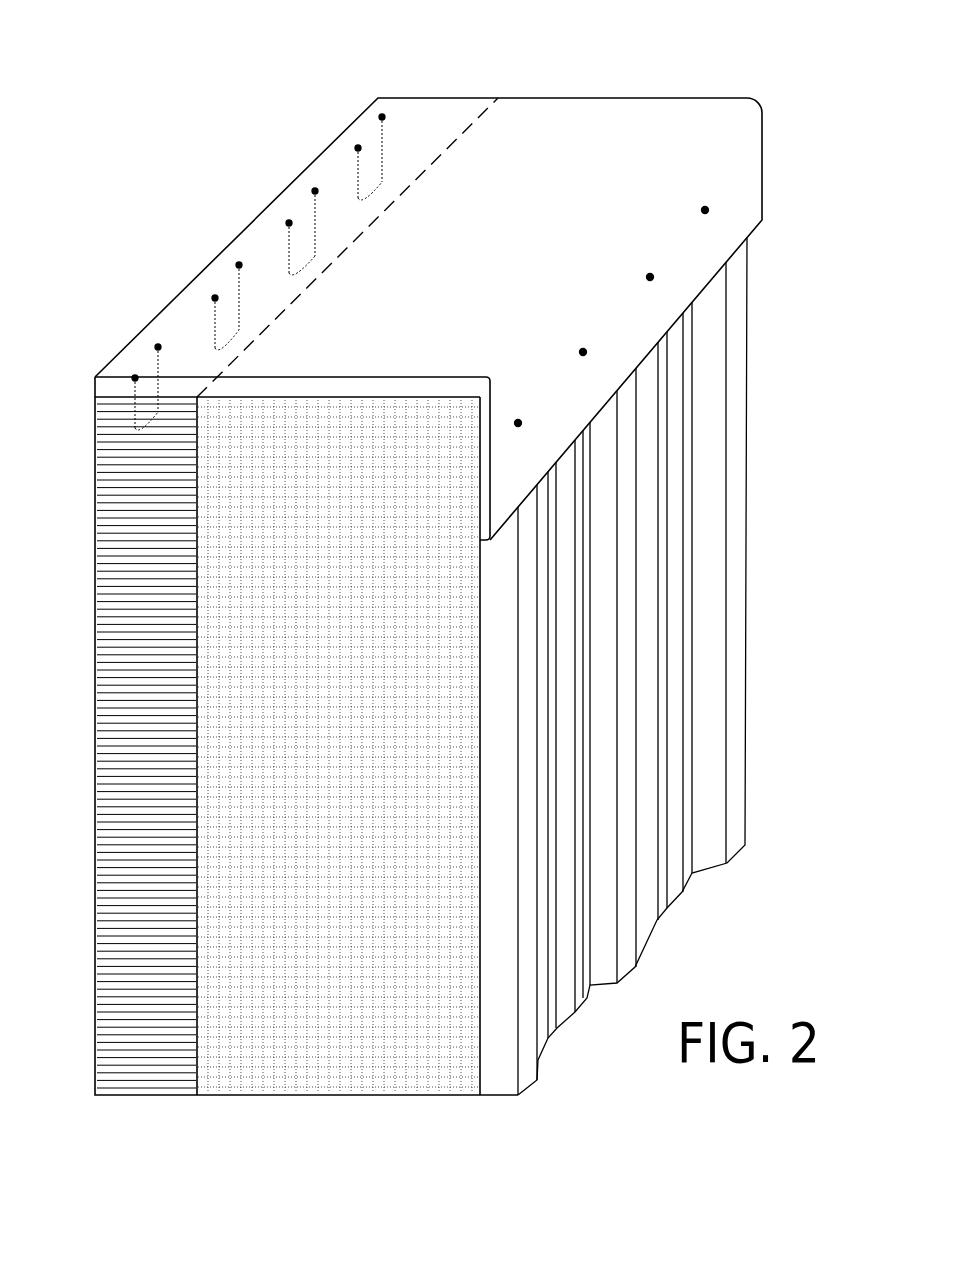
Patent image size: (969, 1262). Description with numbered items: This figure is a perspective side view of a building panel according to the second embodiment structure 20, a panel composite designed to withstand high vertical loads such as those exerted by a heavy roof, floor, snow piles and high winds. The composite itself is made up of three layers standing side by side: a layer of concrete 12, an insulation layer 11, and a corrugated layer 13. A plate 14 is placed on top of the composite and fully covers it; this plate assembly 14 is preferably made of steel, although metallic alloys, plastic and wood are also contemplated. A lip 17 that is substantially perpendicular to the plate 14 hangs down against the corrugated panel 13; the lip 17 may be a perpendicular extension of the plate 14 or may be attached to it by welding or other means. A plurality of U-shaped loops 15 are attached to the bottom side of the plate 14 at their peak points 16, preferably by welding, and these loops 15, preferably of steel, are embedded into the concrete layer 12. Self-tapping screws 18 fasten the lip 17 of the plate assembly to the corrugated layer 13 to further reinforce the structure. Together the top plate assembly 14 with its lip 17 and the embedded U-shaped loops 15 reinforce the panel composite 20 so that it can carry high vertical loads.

The insulation layer 11 is at (460, 1082).
The concrete layer 12 is at (110, 542).
The corrugated layer 13 is at (713, 843).
The plate 14 is at (557, 140).
The U-shaped loops 15 is at (380, 140).
The peak points 16 is at (317, 190).
The lip 17 is at (723, 180).
The self-tapping screws 18 is at (650, 277).
The second embodiment structure 20 is at (428, 596).